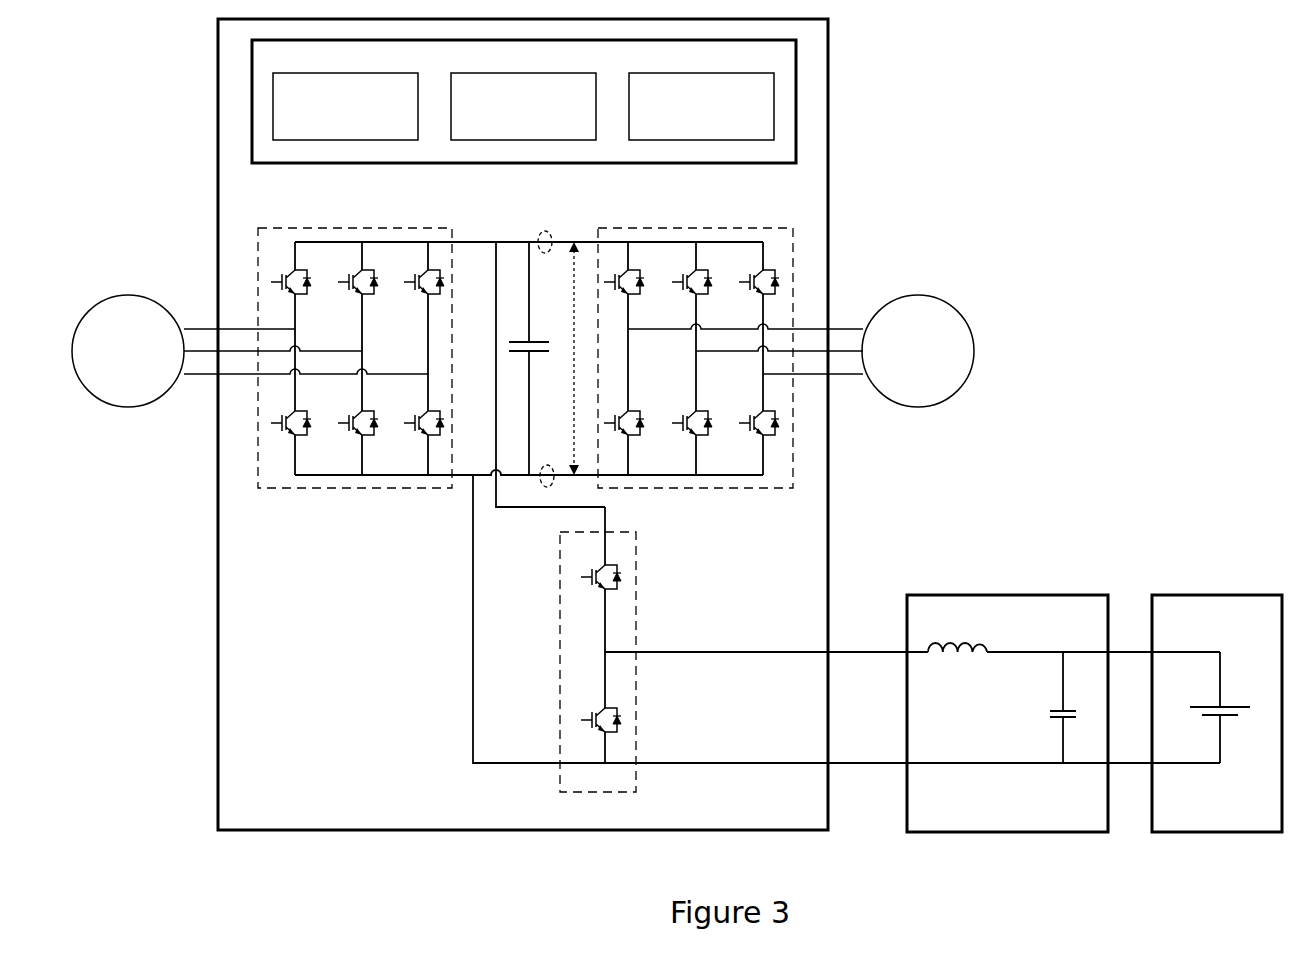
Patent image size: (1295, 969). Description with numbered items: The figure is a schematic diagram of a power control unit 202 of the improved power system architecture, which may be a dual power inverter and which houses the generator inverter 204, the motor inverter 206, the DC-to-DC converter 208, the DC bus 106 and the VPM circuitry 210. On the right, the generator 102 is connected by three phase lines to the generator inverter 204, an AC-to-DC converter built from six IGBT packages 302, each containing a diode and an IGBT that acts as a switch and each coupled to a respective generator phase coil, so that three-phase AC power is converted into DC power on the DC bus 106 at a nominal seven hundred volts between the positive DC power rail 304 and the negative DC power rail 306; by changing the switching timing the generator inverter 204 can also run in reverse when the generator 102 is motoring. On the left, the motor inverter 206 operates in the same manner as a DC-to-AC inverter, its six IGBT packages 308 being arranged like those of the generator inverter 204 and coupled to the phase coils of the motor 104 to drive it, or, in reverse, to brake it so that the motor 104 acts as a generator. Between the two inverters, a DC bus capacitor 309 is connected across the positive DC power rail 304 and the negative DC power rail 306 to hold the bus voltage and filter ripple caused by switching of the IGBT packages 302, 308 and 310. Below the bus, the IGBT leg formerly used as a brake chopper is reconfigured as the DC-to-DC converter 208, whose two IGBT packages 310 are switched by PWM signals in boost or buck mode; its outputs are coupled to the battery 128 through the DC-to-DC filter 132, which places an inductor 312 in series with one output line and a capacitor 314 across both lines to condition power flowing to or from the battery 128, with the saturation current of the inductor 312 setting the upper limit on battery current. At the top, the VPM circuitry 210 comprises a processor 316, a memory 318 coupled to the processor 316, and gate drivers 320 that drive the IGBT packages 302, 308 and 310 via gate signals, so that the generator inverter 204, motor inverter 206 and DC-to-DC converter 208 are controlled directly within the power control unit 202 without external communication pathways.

The generator 102 is at (946, 304).
The motor 104 is at (100, 304).
The DC bus 106 is at (572, 382).
The battery 128 is at (1194, 833).
The DC-to-DC filter 132 is at (950, 833).
The power control unit 202 is at (265, 832).
The generator inverter 204 is at (633, 228).
The motor inverter 206 is at (293, 228).
The DC-to-DC converter 208 is at (582, 793).
The VPM circuitry 210 is at (757, 166).
The IGBT packages 302 is at (646, 262).
The positive DC power rail 304 is at (544, 231).
The negative DC power rail 306 is at (549, 487).
The IGBT packages 308 is at (313, 262).
The DC bus capacitor 309 is at (537, 336).
The IGBT packages 310 is at (590, 600).
The inductor 312 is at (972, 627).
The capacitor 314 is at (1085, 698).
The processor 316 is at (505, 140).
The memory 318 is at (392, 140).
The gate drivers 320 is at (670, 140).